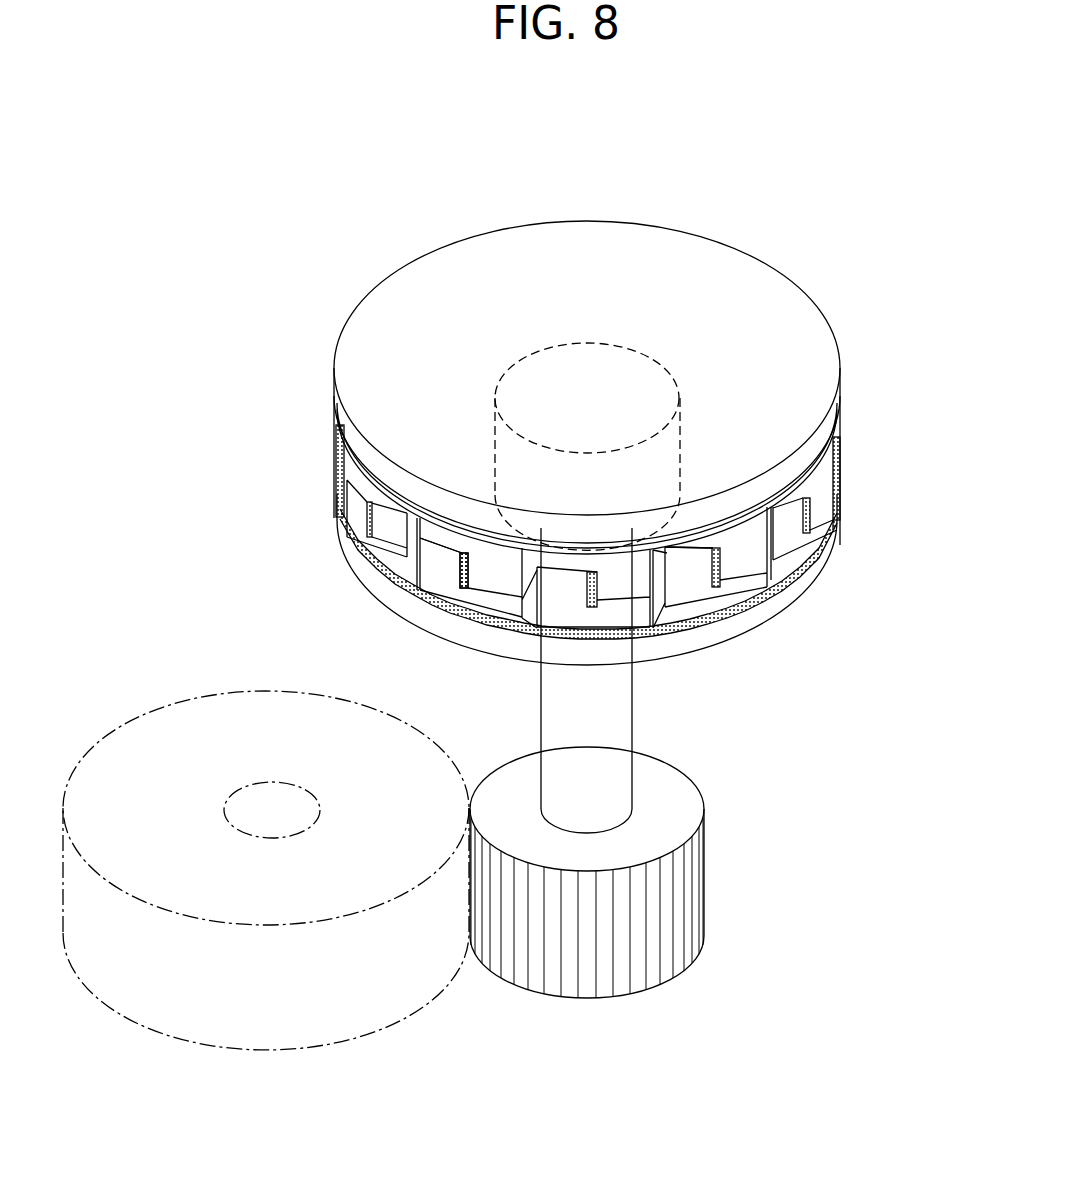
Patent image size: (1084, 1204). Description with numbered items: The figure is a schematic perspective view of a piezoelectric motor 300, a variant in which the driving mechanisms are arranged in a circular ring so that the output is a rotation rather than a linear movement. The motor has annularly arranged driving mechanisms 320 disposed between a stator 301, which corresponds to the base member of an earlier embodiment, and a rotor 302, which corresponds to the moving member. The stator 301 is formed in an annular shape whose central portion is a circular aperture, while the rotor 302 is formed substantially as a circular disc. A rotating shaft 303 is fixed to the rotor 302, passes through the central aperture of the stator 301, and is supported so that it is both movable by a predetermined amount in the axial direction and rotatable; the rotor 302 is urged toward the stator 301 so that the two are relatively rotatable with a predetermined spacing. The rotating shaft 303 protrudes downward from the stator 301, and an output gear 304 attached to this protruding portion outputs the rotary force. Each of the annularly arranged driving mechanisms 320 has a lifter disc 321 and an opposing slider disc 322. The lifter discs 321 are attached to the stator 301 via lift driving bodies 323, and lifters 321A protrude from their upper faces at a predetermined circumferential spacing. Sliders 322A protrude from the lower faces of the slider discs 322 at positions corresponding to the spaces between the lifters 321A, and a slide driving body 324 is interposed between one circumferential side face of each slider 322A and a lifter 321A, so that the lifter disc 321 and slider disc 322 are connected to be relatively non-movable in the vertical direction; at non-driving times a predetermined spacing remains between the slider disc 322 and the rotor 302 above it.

The piezoelectric motor 300 is at (302, 160).
The stator 301 is at (326, 562).
The rotor 302 is at (368, 353).
The rotating shaft 303 is at (635, 790).
The output gear 304 is at (700, 887).
The annularly arranged driving mechanisms 320 is at (200, 428).
The lifter disc 321 is at (336, 518).
The lifter 321A is at (448, 562).
The slider disc 322 is at (316, 459).
The slider 322A is at (400, 540).
The lift driving body 323 is at (665, 630).
The slide driving body 324 is at (440, 570).